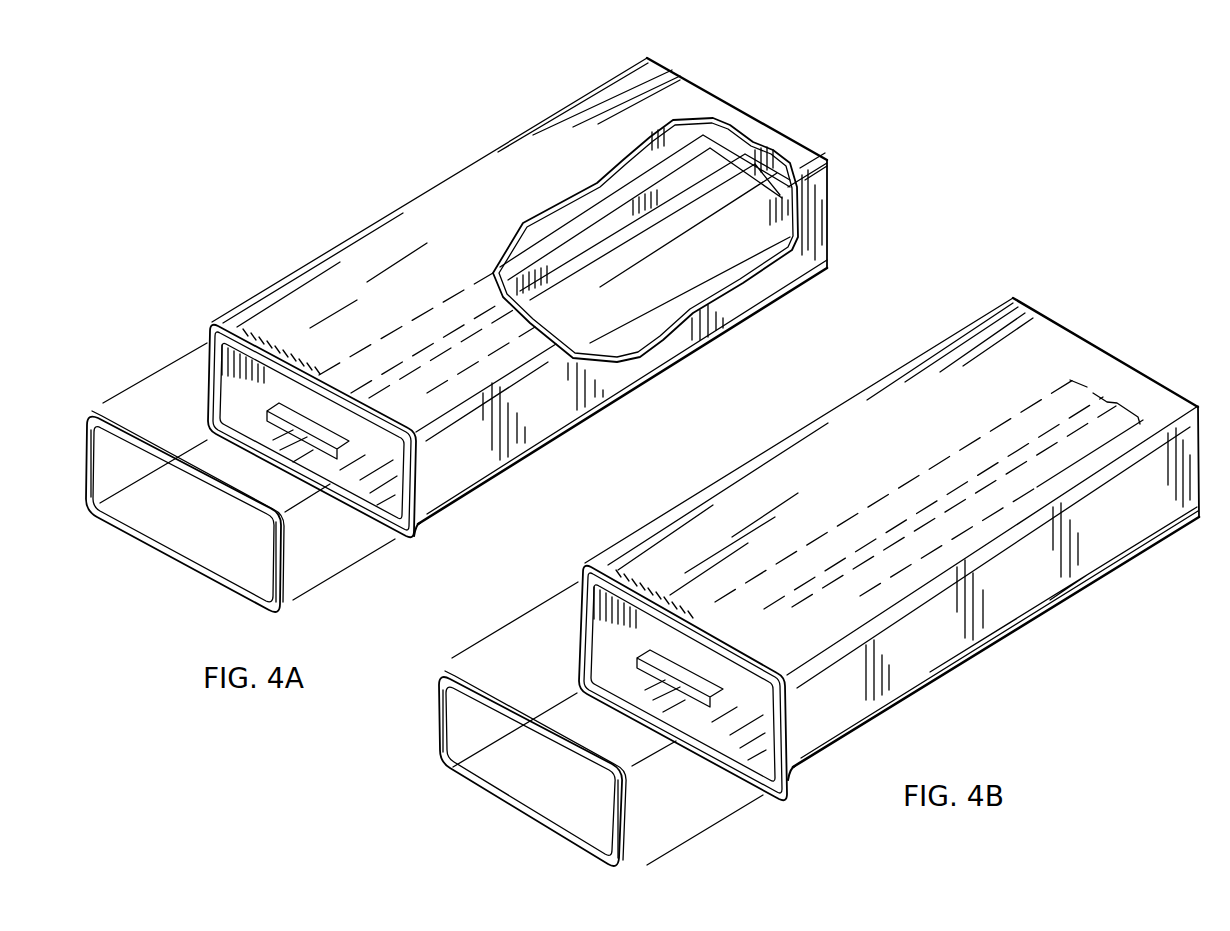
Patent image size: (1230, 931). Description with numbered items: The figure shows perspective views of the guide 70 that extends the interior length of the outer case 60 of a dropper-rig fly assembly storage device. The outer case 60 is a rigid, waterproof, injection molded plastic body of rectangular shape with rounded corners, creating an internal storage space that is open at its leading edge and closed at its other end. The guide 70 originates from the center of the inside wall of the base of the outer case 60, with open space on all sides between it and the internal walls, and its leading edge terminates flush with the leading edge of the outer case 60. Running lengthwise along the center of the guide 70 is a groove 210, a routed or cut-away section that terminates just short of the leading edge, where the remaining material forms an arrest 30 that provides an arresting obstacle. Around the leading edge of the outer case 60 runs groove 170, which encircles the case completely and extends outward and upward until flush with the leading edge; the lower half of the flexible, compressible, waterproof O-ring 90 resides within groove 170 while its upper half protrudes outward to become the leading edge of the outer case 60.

In FIG. 4A, the outer case 60 is at (530, 190).
In FIG. 4B, the outer case 60 is at (917, 425).
In FIG. 4A, the guide 70 is at (710, 150).
In FIG. 4B, the guide 70 is at (1063, 448).
In FIG. 4A, the arrest 30 is at (310, 430).
In FIG. 4B, the arrest 30 is at (683, 673).
In FIG. 4A, the groove 170 is at (407, 478).
In FIG. 4B, the groove 170 is at (783, 733).
In FIG. 4A, the O-ring 90 is at (222, 588).
In FIG. 4B, the O-ring 90 is at (527, 820).
In FIG. 4B, the groove 210 is at (877, 547).